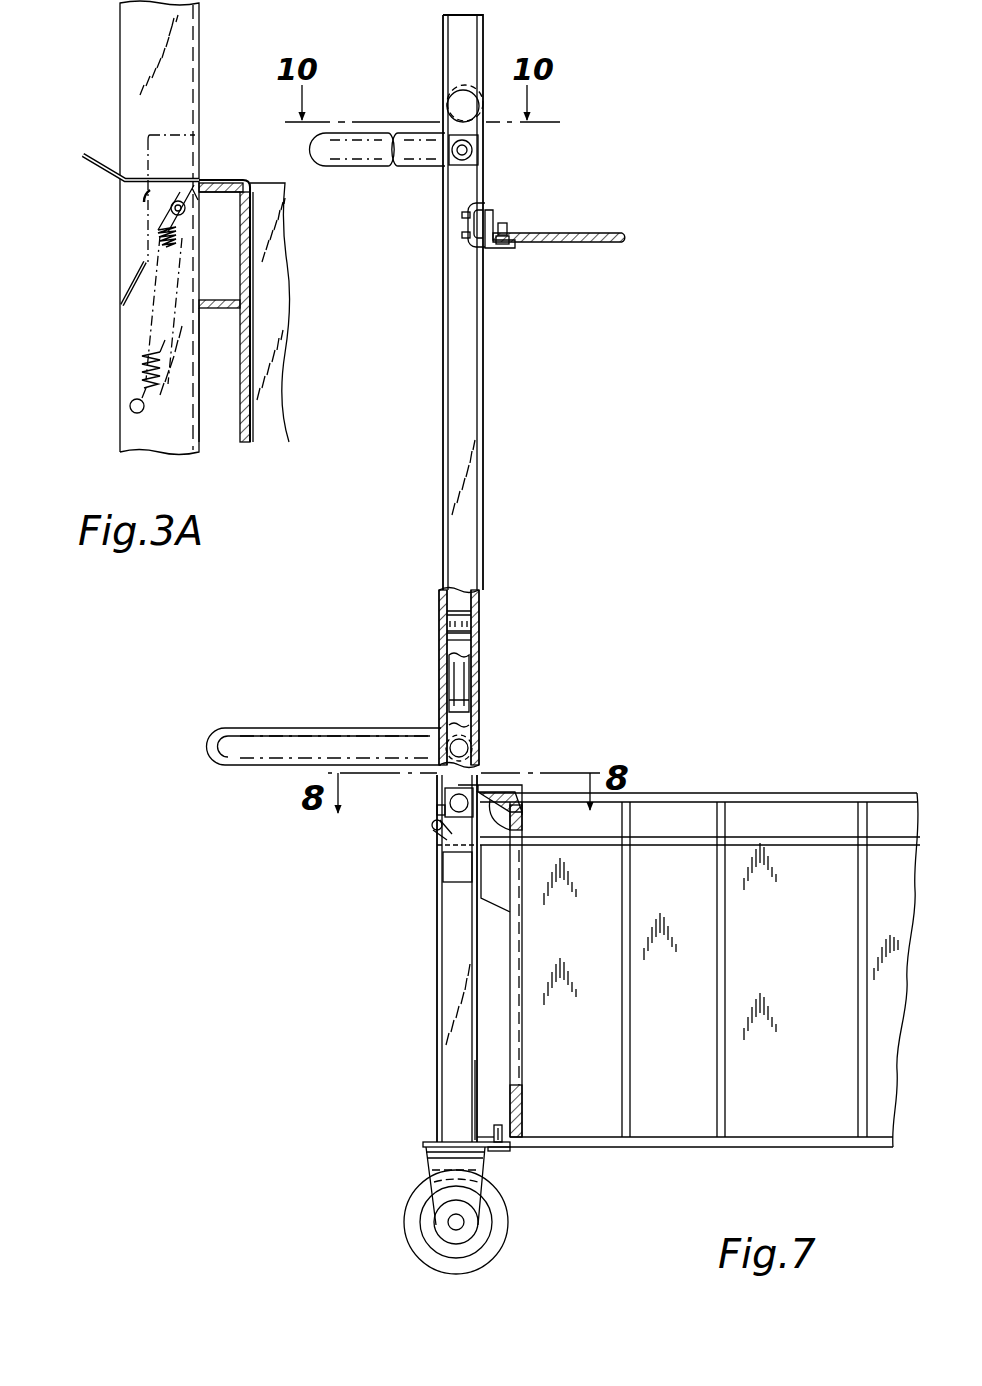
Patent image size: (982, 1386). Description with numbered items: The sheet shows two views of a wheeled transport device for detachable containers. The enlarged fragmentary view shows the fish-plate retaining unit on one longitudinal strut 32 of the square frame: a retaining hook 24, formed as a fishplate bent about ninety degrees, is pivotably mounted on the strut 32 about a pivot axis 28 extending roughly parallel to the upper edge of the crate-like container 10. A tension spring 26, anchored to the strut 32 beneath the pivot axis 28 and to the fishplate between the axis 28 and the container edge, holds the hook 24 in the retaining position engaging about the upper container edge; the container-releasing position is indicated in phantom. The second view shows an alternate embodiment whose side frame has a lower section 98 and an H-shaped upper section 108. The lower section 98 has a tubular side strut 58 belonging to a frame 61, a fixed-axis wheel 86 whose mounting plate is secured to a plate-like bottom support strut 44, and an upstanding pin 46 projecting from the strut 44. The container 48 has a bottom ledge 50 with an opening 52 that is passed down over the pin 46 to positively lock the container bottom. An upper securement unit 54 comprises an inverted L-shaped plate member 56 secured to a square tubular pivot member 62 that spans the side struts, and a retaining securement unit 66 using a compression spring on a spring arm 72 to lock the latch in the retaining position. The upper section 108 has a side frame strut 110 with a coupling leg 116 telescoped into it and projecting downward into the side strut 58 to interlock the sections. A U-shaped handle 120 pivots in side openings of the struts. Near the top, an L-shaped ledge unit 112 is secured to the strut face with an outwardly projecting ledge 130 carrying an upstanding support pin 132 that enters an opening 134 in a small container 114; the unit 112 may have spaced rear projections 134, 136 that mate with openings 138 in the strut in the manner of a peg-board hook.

In FIG. 3A, the container 10 is at (256, 436).
In FIG. 3A, the retaining hook 24 is at (228, 178).
In FIG. 3A, the tension spring 26 is at (140, 369).
In FIG. 3A, the pivot axis 28 is at (178, 200).
In FIG. 3A, the longitudinal strut 32 is at (116, 62).
In FIG. 7, the bottom support strut 44 is at (488, 1158).
In FIG. 7, the upstanding pin 46 is at (508, 1150).
In FIG. 7, the container 48 is at (775, 792).
In FIG. 7, the bottom ledge 50 is at (490, 1140).
In FIG. 7, the opening 52 is at (494, 1124).
In FIG. 7, the upper securement unit 54 is at (441, 800).
In FIG. 7, the L-shaped plate member 56 is at (503, 788).
In FIG. 7, the side strut 58 is at (434, 947).
In FIG. 7, the frame 61 is at (437, 666).
In FIG. 7, the square tubular pivot member 62 is at (436, 812).
In FIG. 7, the retaining securement unit 66 is at (438, 850).
In FIG. 7, the spring arm 72 is at (432, 832).
In FIG. 7, the wheel 86 is at (405, 1250).
In FIG. 7, the lower section 98 is at (434, 1028).
In FIG. 7, the upper section 108 is at (490, 430).
In FIG. 7, the side frame strut 110 is at (484, 358).
In FIG. 7, the container support 112 is at (453, 94).
In FIG. 7, the small container 114 is at (626, 242).
In FIG. 7, the coupling leg 116 is at (464, 680).
In FIG. 7, the handle 120 is at (430, 162).
In FIG. 7, the ledge 130 is at (514, 248).
In FIG. 7, the support pin 132 is at (504, 232).
In FIG. 7, the opening / rear projection 134 is at (462, 216).
In FIG. 7, the rear projection 136 is at (462, 236).
In FIG. 7, the opening 138 is at (486, 208).